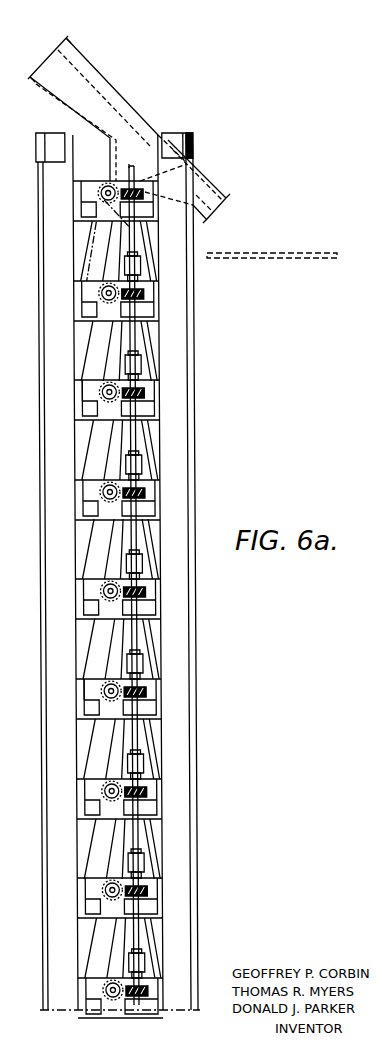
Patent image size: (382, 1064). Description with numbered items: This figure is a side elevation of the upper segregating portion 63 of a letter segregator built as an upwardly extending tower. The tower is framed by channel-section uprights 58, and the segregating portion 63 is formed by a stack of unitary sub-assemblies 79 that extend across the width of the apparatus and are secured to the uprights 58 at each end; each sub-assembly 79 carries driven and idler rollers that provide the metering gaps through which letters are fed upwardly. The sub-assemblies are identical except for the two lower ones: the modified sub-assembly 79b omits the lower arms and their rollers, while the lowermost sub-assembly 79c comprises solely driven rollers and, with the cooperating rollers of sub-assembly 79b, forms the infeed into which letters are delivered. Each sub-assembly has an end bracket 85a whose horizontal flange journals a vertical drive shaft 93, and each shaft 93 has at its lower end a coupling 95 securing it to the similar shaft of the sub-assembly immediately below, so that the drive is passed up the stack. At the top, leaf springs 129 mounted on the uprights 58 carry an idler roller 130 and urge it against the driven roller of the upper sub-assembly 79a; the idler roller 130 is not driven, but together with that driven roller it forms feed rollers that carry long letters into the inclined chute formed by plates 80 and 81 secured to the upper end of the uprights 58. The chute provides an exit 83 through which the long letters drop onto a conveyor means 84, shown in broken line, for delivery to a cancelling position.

The channel-section uprights 58 is at (46, 823).
The upper segregating portion 63 is at (39, 466).
The unitary sub-assembly 79 is at (165, 404).
The upper sub-assembly 79a is at (78, 186).
The modified sub-assembly 79b is at (76, 887).
The lowermost sub-assembly 79c is at (77, 1000).
The chute plate 80 is at (116, 92).
The chute plate 81 is at (62, 97).
The exit 83 is at (219, 209).
The conveyor means 84 is at (300, 259).
The end bracket 85a is at (88, 392).
The vertical drive shaft 93 is at (137, 439).
The coupling 95 is at (141, 468).
The leaf springs 129 is at (120, 233).
The idler roller 130 is at (193, 163).